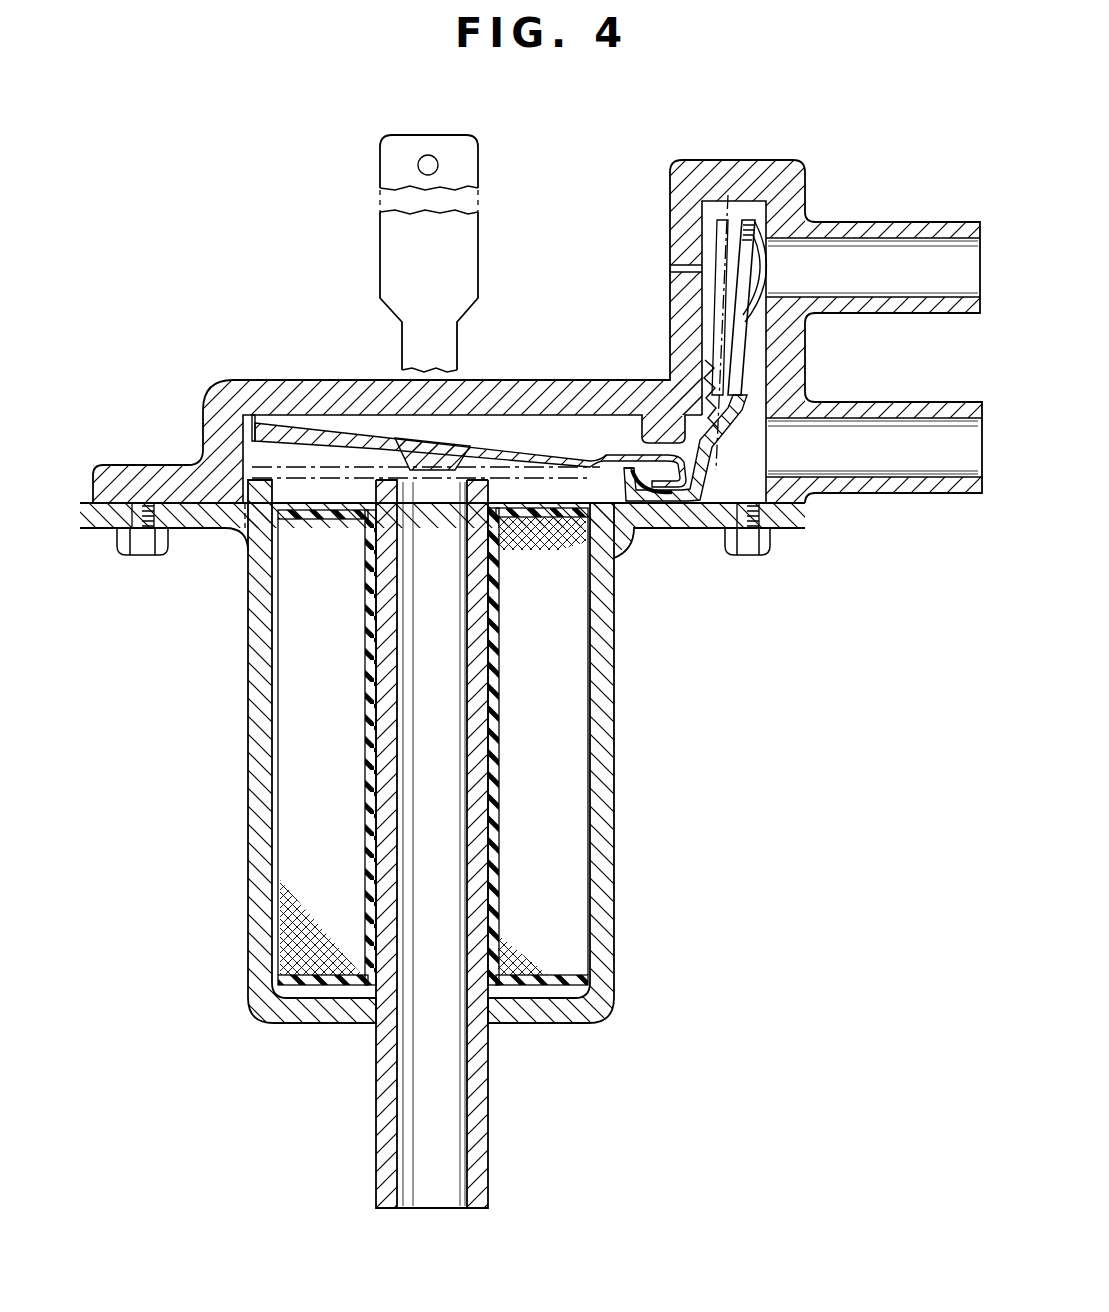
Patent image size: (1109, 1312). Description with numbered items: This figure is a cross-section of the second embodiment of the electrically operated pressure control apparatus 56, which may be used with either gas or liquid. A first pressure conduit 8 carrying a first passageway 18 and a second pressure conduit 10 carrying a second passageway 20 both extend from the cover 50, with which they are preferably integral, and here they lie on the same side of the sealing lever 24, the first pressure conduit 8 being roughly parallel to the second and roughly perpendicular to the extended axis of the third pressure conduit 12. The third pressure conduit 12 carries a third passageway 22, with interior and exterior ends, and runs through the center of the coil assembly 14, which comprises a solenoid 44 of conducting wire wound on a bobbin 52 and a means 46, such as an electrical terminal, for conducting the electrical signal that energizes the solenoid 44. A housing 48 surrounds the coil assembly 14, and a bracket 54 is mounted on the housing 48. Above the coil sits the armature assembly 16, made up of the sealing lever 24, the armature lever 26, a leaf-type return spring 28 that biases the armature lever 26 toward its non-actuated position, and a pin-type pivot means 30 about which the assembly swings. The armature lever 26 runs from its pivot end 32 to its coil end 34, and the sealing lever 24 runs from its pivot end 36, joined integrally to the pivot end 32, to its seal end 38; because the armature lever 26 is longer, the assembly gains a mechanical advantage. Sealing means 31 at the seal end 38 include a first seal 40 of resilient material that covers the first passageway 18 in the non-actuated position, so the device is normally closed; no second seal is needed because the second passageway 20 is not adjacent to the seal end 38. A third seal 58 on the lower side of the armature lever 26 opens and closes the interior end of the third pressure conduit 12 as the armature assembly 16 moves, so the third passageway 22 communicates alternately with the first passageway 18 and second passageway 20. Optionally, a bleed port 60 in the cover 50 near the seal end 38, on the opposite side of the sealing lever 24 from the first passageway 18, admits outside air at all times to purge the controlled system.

The first pressure conduit 8 is at (876, 223).
The second pressure conduit 10 is at (905, 488).
The third pressure conduit 12 is at (378, 562).
The coil assembly 14 is at (226, 806).
The armature assembly 16 is at (568, 360).
The first passageway 18 is at (906, 281).
The second passageway 20 is at (848, 461).
The third passageway 22 is at (417, 568).
The sealing lever 24 is at (742, 343).
The armature lever 26 is at (366, 437).
The return spring 28 is at (700, 422).
The pivot means 30 is at (682, 548).
The sealing means 31 is at (722, 150).
The pivot end of armature lever 32 is at (628, 470).
The coil end of armature lever 34 is at (254, 418).
The pivot end of sealing lever 36 is at (716, 440).
The seal end of sealing lever 38 is at (720, 220).
The first seal 40 is at (772, 272).
The solenoid 44 is at (303, 663).
The means for receiving an electrical signal 46 is at (392, 290).
The housing 48 is at (257, 713).
The cover 50 is at (670, 216).
The bobbin 52 is at (364, 788).
The bracket 54 is at (183, 520).
The second embodiment of pressure control apparatus 56 is at (724, 782).
The third seal 58 is at (440, 470).
The bleed port 60 is at (690, 268).